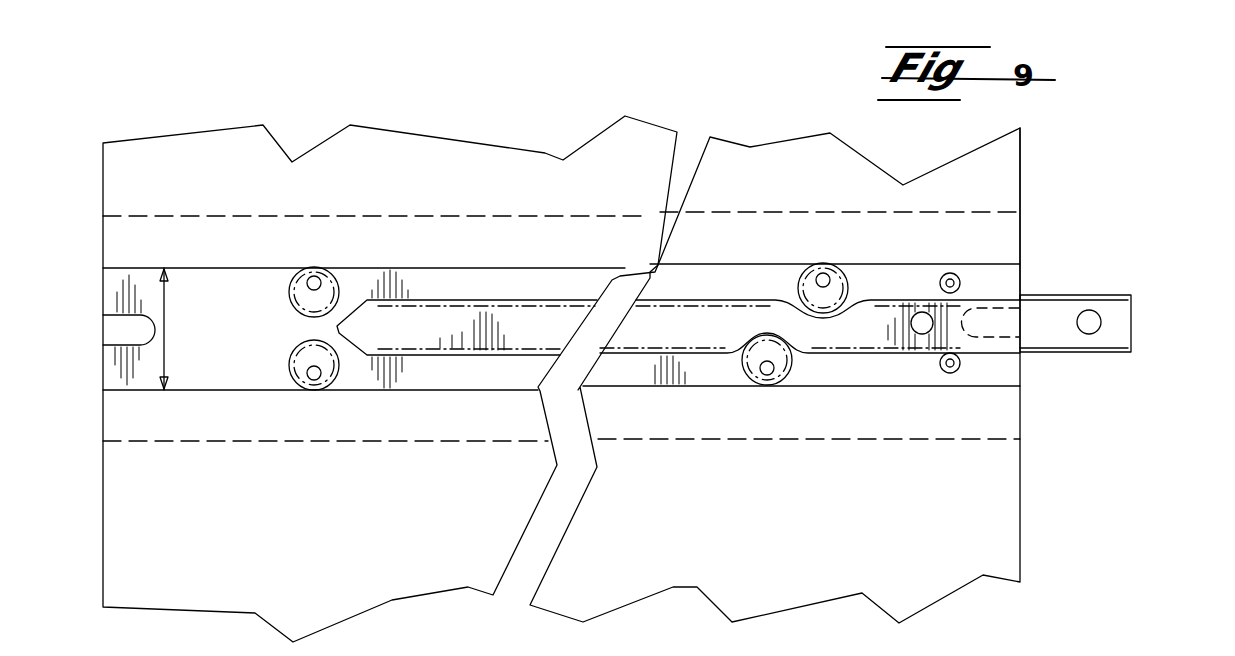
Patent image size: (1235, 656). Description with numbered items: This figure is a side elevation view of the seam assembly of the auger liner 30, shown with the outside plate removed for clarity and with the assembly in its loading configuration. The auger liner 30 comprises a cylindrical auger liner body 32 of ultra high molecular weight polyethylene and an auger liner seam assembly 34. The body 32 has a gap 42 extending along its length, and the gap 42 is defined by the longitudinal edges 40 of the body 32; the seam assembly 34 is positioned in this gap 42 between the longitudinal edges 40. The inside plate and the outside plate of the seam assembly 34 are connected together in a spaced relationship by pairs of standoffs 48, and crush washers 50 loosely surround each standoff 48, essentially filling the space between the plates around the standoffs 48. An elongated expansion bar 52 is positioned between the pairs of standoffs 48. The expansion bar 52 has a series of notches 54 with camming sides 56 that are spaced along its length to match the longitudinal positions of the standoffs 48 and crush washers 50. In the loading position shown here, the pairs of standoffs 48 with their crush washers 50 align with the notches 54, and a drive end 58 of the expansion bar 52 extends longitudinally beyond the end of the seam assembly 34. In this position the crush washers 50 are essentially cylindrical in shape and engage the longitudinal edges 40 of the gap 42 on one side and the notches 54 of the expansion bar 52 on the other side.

The auger liner 30 is at (212, 128).
The auger liner body 32 is at (1021, 483).
The auger liner seam assembly 34 is at (1022, 273).
The longitudinal edges 40 is at (522, 387).
The gap 42 is at (167, 323).
The standoffs 48 is at (312, 282).
The crush washers 50 is at (288, 297).
The expansion bar 52 is at (417, 320).
The notches 54 is at (795, 305).
The camming sides 56 is at (352, 303).
The drive end 58 is at (1132, 312).